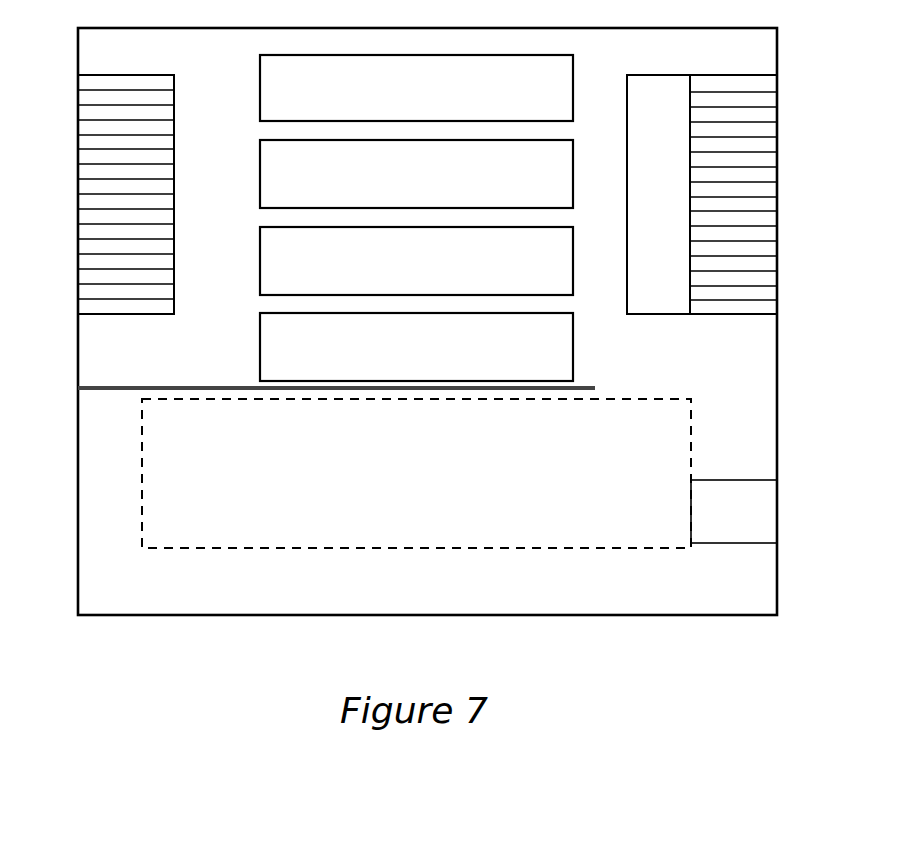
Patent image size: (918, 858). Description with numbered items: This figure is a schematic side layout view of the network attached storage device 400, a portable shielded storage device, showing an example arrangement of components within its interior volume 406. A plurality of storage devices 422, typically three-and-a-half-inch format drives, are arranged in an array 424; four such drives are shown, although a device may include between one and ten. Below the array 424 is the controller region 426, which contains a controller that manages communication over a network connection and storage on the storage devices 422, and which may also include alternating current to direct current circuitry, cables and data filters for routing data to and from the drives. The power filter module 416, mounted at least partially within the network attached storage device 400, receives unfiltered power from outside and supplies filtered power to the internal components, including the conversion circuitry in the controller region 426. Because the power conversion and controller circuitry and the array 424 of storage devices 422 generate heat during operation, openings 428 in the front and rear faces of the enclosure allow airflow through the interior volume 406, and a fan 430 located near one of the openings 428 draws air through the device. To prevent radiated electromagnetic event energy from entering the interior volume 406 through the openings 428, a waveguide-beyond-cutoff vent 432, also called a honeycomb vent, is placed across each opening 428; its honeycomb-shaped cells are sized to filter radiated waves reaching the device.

The network attached storage device 400 is at (426, 390).
The interior volume 406 is at (427, 321).
The power filter module 416 is at (707, 480).
The storage devices 422 is at (416, 218).
The array 424 is at (336, 221).
The controller region 426 is at (416, 473).
The openings 428 is at (55, 271).
The fan 430 is at (658, 194).
The waveguide-beyond-cutoff vent 432 is at (175, 117).